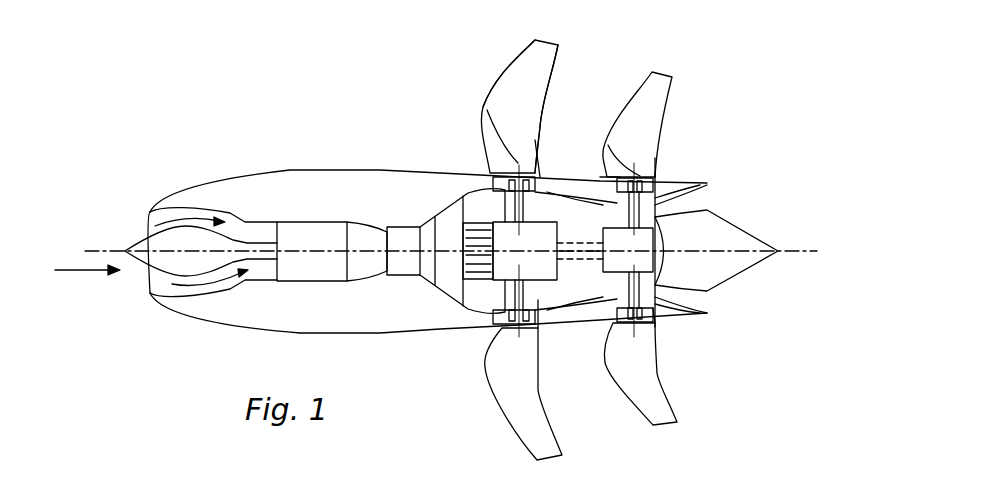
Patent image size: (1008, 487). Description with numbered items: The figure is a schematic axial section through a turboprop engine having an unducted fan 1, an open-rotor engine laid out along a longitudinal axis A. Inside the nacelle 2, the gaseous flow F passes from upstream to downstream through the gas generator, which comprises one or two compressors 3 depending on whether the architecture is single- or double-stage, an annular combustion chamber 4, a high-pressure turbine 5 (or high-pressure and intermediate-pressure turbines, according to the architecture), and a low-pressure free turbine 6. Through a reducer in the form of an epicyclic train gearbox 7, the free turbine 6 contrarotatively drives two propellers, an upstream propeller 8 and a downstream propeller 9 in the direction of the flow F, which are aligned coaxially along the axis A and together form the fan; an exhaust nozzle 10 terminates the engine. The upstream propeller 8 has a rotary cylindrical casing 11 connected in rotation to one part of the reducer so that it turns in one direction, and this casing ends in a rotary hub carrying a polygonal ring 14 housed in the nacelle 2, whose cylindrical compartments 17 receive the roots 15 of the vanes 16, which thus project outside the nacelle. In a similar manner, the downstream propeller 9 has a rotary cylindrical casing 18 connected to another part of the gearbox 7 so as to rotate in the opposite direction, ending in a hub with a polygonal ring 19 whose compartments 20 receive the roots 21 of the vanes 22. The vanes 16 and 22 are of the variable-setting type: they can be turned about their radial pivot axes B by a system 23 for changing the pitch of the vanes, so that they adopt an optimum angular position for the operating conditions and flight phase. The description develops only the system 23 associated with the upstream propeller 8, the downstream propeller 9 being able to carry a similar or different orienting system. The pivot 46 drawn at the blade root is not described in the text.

The turboprop engine having an unducted fan 1 is at (224, 146).
The nacelle 2 is at (292, 165).
The compressor 3 is at (313, 263).
The annular combustion chamber 4 is at (375, 263).
The high-pressure turbine 5 is at (420, 263).
The low-pressure free turbine 6 is at (457, 263).
The epicyclic train gearbox 7 is at (462, 210).
The upstream propeller 8 is at (562, 445).
The downstream propeller 9 is at (677, 434).
The exhaust nozzle 10 is at (768, 228).
The rotary cylindrical casing 11 is at (550, 305).
The polygonal ring 14 is at (493, 185).
The vane roots 15 is at (537, 135).
The vanes 16 is at (553, 43).
The cylindrical compartments 17 is at (490, 322).
The rotary cylindrical casing 18 is at (710, 195).
The polygonal ring 19 is at (610, 182).
The compartments 20 is at (655, 312).
The vane roots 21 is at (655, 158).
The vanes 22 is at (670, 76).
The system for changing the pitch of the vanes 23 is at (538, 263).
The pivot 46 is at (544, 176).
The longitudinal axis A is at (802, 250).
The radial pivot axes B is at (485, 108).
The gaseous flow F is at (87, 290).